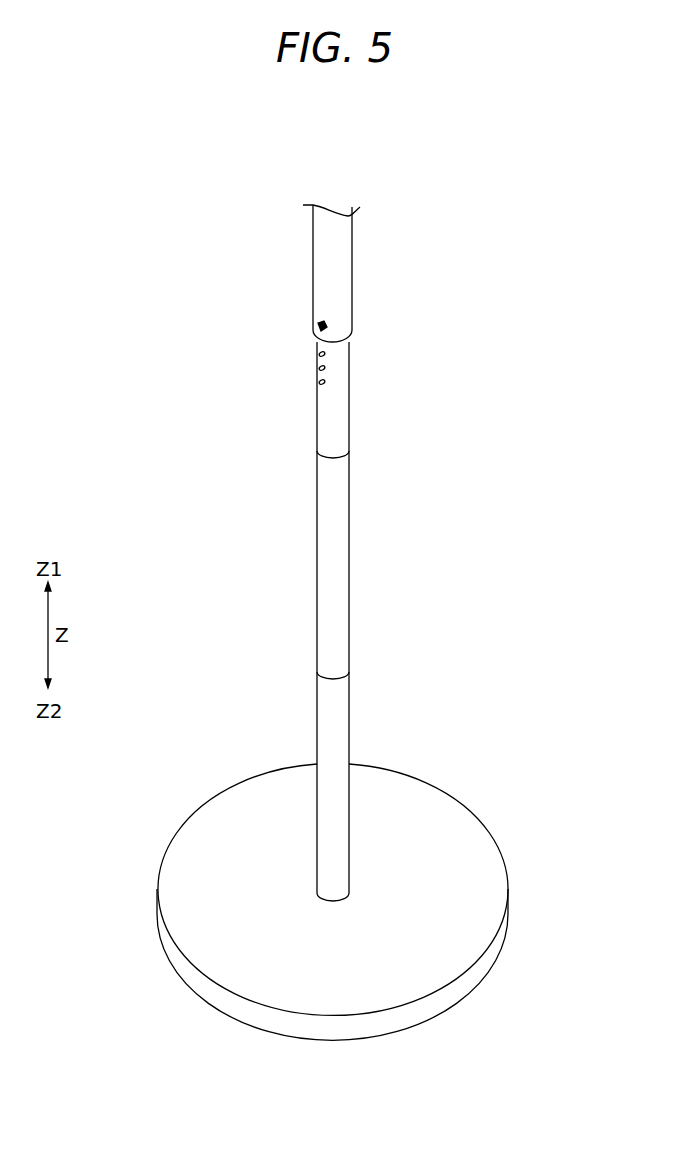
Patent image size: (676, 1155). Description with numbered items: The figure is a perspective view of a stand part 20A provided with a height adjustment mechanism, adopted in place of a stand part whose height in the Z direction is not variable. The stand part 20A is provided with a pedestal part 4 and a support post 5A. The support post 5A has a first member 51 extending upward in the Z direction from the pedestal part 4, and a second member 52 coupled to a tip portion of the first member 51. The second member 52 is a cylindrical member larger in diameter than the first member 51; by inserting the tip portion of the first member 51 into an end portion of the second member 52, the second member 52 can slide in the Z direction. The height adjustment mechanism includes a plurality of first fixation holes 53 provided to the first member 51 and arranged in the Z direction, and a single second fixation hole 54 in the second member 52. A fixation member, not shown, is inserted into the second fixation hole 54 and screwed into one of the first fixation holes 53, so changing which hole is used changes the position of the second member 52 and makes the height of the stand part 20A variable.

The stand part 20A is at (162, 277).
The support post 5A is at (458, 716).
The second member 52 is at (353, 265).
The first member 51 is at (349, 708).
The first fixation holes 53 is at (318, 354).
The second fixation hole 54 is at (314, 331).
The pedestal part 4 is at (500, 845).